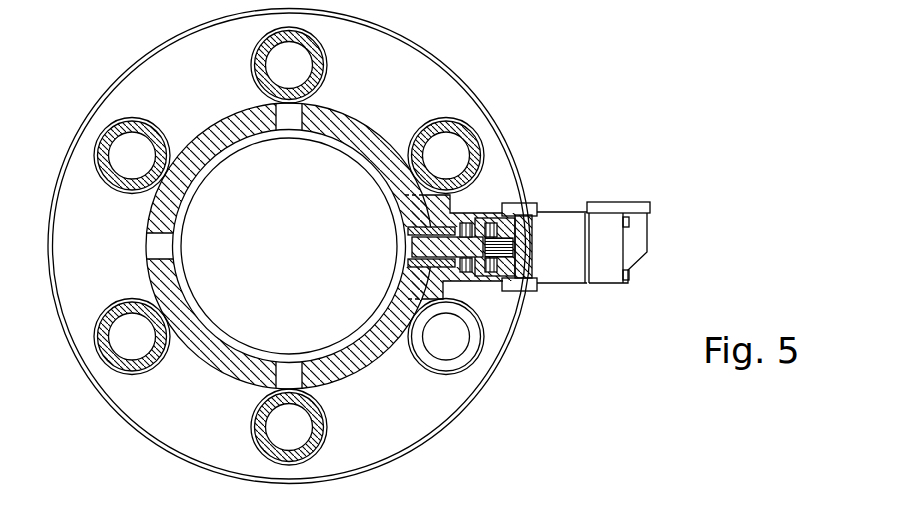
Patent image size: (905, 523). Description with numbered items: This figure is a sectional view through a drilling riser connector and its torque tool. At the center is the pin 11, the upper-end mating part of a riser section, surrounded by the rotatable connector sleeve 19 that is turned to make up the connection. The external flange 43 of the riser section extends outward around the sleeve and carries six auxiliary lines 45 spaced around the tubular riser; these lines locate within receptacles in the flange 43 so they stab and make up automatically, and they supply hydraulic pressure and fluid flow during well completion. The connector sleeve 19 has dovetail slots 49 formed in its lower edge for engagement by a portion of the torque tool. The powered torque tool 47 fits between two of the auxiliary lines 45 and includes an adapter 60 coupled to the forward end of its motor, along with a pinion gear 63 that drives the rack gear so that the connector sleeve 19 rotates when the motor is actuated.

The pin 11 is at (358, 157).
The connector sleeve 19 is at (359, 157).
The external flange 43 is at (438, 92).
The auxiliary lines 45 is at (466, 128).
The powered torque tool 47 is at (590, 171).
The dovetail slots 49 is at (285, 120).
The adapter 60 is at (452, 205).
The pinion gear 63 is at (455, 270).